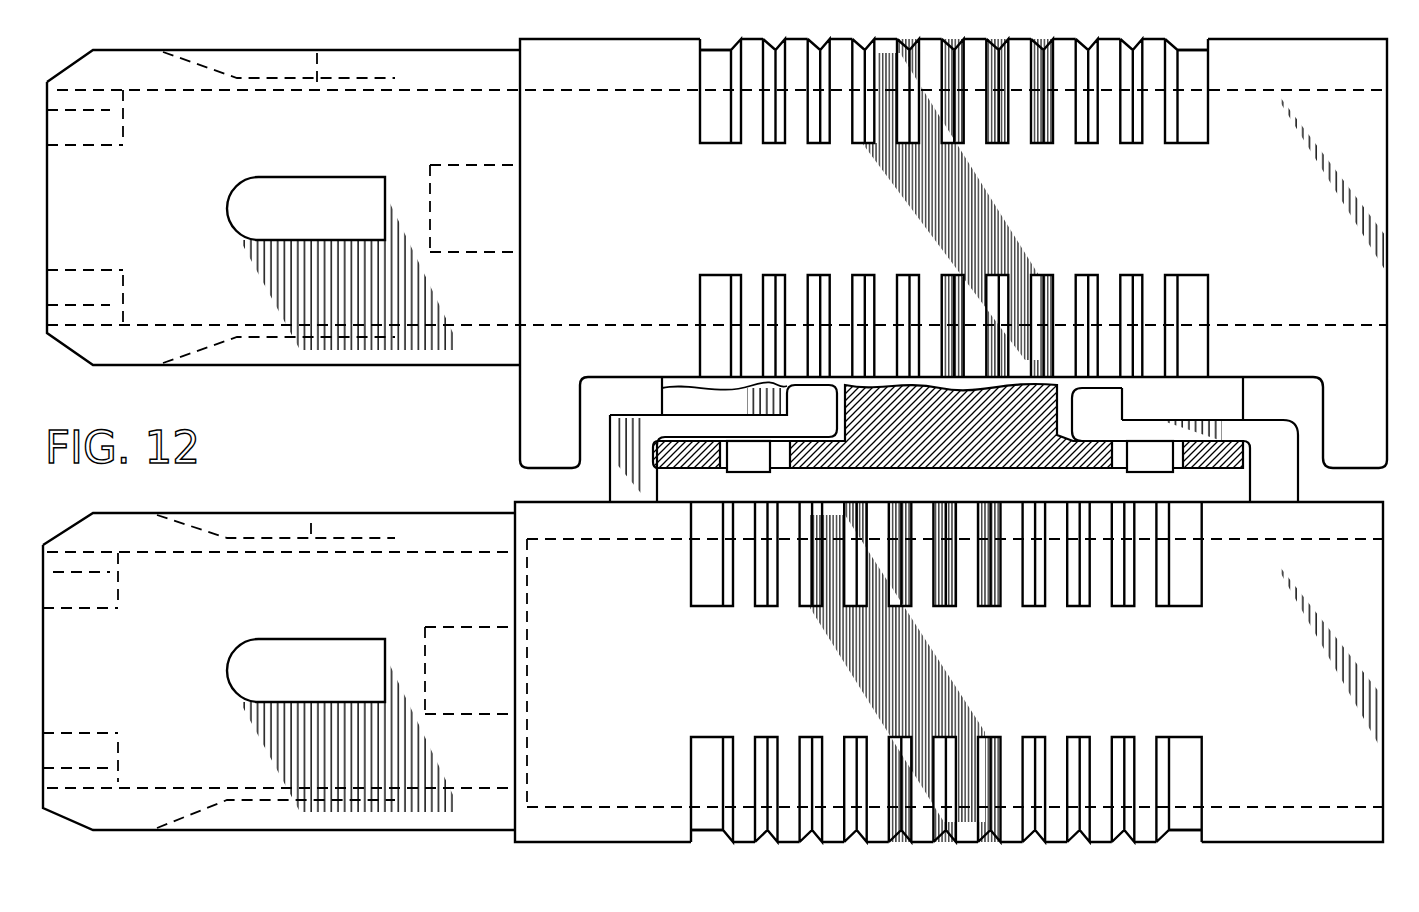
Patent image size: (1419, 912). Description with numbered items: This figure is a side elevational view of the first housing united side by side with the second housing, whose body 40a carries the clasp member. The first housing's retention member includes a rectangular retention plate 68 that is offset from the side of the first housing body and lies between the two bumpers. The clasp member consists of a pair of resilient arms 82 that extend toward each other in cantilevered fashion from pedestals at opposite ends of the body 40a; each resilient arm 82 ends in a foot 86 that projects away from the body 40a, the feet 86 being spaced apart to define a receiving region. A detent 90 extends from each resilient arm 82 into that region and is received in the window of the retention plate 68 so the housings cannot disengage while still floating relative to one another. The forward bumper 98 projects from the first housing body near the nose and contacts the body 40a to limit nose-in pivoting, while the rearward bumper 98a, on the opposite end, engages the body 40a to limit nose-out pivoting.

The body 40a is at (1300, 237).
The retention plate 68 is at (890, 413).
The resilient arm 82 is at (737, 423).
The foot 86 is at (1102, 408).
The detent 90 is at (753, 453).
The forward bumper 98 is at (553, 443).
The rearward bumper 98a is at (1357, 440).